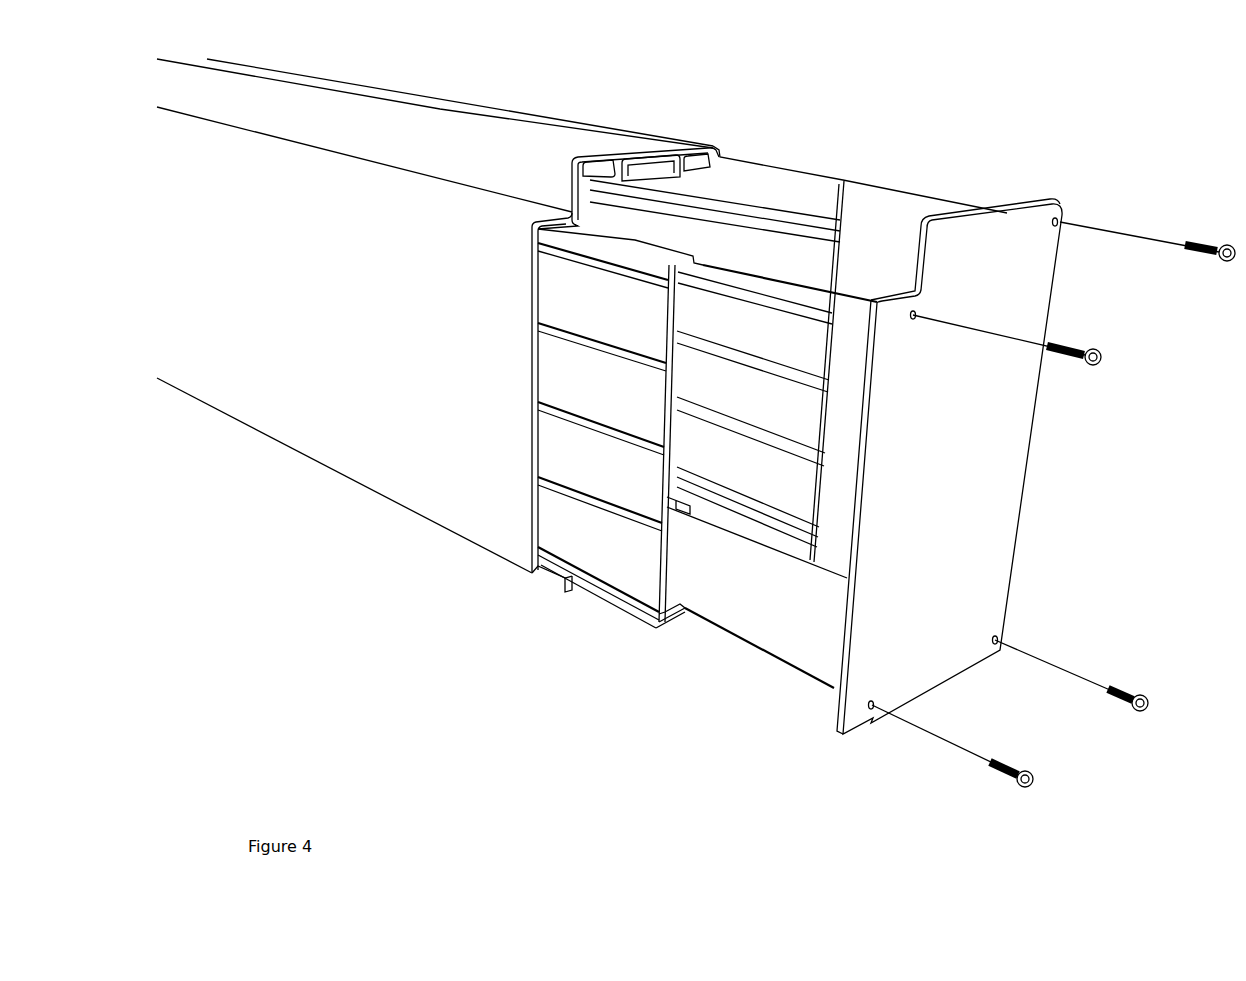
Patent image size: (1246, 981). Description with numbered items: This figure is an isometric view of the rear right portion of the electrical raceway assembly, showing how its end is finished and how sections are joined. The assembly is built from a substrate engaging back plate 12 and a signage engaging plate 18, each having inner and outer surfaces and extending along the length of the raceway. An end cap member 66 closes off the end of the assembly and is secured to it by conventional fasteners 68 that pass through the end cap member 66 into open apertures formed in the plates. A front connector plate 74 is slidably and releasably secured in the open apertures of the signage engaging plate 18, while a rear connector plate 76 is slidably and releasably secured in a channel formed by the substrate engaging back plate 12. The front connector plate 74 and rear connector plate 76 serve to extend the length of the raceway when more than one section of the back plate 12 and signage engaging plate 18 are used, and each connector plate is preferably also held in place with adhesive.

The substrate engaging back plate 12 is at (388, 329).
The signage engaging plate 18 is at (427, 152).
The end cap member 66 is at (958, 495).
The fasteners 68 is at (1228, 262).
The front connector plate 74 is at (818, 178).
The rear connector plate 76 is at (655, 630).